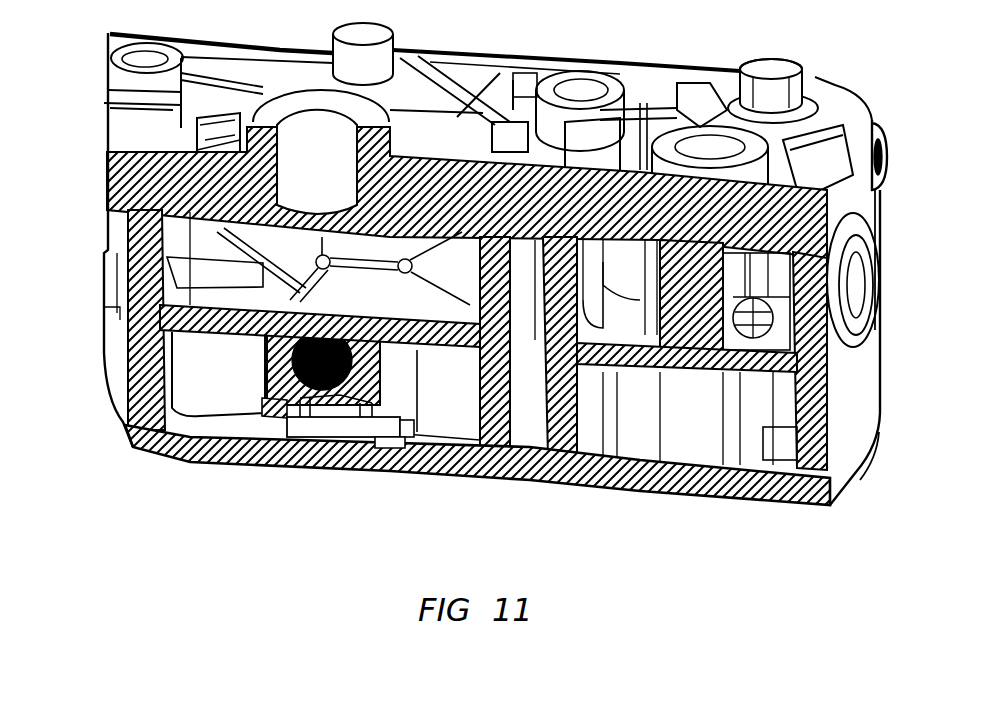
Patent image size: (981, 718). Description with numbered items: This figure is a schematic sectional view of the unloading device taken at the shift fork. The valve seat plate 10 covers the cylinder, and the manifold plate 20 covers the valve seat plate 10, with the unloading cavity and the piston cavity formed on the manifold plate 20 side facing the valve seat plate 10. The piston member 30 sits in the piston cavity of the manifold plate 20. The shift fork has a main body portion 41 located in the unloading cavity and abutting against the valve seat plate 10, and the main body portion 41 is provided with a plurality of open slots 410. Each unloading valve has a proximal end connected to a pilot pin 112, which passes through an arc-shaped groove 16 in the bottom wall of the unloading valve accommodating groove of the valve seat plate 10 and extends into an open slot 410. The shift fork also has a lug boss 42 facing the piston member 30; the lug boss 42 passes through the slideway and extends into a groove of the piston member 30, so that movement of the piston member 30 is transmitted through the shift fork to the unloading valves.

The valve seat plate 10 is at (324, 472).
The manifold plate 20 is at (107, 393).
The piston member 30 is at (298, 347).
The lug boss 42 is at (276, 388).
The pilot pin 112 is at (262, 462).
The main body portion 41 is at (353, 473).
The arc-shaped groove 16 is at (390, 470).
The open slot 410 is at (407, 433).